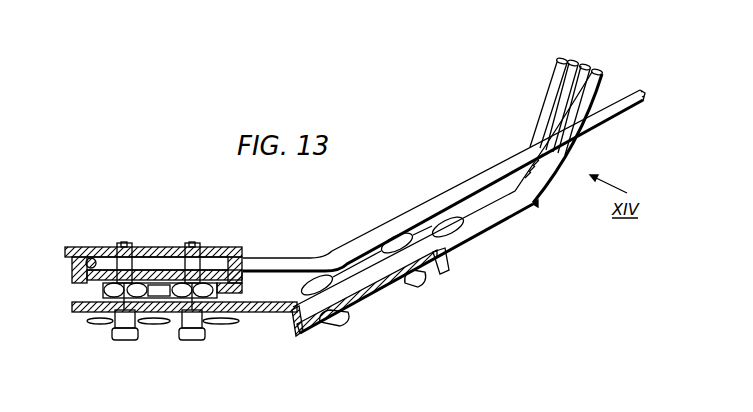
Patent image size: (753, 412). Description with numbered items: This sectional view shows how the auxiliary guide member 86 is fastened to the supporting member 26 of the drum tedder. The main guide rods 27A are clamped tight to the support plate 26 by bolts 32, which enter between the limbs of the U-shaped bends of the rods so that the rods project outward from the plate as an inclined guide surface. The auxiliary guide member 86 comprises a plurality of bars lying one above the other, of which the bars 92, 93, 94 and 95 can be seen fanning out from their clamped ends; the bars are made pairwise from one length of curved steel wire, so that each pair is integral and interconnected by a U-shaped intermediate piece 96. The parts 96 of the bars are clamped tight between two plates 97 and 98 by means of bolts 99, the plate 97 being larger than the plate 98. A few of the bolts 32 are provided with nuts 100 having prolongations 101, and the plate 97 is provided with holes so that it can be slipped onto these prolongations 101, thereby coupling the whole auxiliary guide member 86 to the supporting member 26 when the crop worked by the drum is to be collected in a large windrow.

The support plate 26 is at (218, 247).
The bolt 32 is at (183, 245).
The nut 100 is at (100, 290).
The U-shaped intermediate piece 96 is at (297, 327).
The prolongation 101 is at (138, 337).
The plate 97 is at (80, 322).
The rod 27A is at (403, 217).
The plate 98 is at (447, 255).
The bolt 99 is at (418, 287).
The auxiliary guide member 86 is at (538, 203).
The bar 92 is at (603, 71).
The bar 93 is at (588, 64).
The bar 94 is at (574, 62).
The bar 95 is at (560, 68).